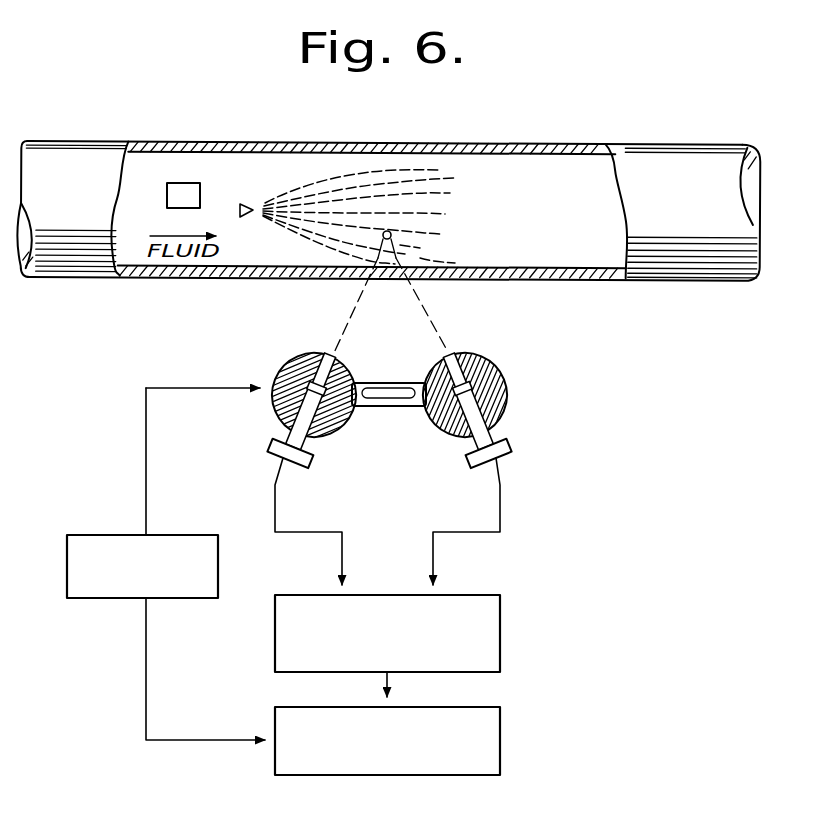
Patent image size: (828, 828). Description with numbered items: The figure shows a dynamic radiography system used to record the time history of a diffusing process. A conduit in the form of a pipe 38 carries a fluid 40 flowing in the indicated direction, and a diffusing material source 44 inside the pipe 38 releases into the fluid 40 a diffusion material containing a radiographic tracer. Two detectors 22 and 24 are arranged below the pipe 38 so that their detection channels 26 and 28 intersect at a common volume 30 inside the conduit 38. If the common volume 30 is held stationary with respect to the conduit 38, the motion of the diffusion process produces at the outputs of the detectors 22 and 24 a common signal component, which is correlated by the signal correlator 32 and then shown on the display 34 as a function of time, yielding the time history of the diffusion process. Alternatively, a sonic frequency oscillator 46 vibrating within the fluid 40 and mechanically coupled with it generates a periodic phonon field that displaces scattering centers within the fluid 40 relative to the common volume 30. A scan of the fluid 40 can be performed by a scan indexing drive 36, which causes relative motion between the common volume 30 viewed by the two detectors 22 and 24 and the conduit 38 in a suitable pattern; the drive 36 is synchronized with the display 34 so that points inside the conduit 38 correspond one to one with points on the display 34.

The detector 22 is at (481, 372).
The detector 24 is at (290, 358).
The detection channel 26 is at (428, 314).
The detection channel 28 is at (352, 312).
The common volume 30 is at (392, 234).
The signal correlator 32 is at (482, 606).
The display 34 is at (465, 768).
The scan indexing drive 36 is at (80, 587).
The pipe 38 is at (375, 143).
The fluid 40 is at (283, 254).
The diffusing material source 44 is at (247, 203).
The sonic frequency oscillator 46 is at (183, 197).